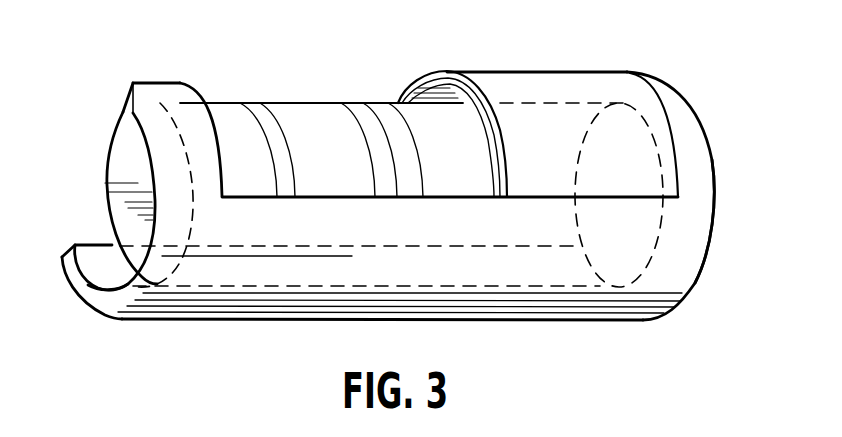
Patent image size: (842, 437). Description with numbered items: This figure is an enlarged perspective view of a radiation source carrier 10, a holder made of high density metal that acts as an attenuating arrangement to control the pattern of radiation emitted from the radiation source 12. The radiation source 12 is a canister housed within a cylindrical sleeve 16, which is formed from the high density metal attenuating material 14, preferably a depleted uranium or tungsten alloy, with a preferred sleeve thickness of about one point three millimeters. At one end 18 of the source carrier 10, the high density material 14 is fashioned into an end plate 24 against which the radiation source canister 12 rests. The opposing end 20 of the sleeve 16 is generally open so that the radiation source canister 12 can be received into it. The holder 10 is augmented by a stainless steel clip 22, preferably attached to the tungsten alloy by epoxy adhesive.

The radiation source carrier 10 is at (744, 74).
The radiation source 12 is at (302, 117).
The high density metal attenuating material 14 is at (533, 280).
The cylindrical sleeve 16 is at (92, 250).
The end 18 is at (733, 153).
The opposing end 20 is at (96, 130).
The clip 22 is at (535, 80).
The end plate 24 is at (713, 238).